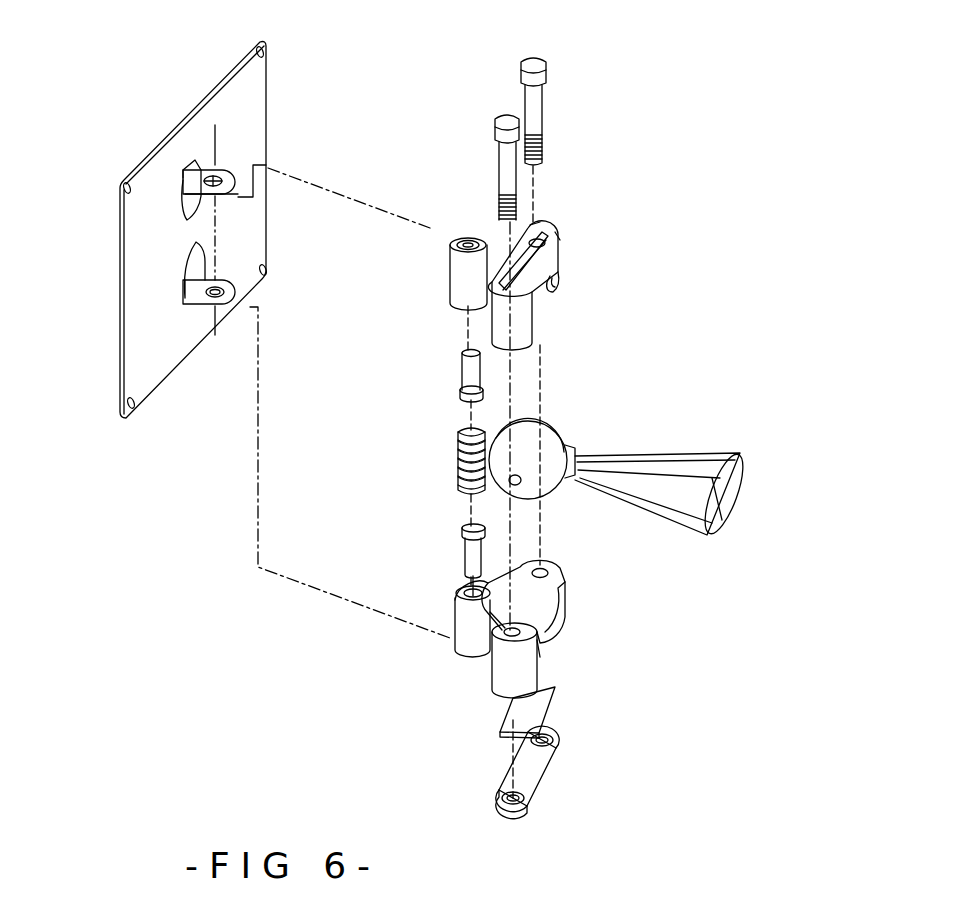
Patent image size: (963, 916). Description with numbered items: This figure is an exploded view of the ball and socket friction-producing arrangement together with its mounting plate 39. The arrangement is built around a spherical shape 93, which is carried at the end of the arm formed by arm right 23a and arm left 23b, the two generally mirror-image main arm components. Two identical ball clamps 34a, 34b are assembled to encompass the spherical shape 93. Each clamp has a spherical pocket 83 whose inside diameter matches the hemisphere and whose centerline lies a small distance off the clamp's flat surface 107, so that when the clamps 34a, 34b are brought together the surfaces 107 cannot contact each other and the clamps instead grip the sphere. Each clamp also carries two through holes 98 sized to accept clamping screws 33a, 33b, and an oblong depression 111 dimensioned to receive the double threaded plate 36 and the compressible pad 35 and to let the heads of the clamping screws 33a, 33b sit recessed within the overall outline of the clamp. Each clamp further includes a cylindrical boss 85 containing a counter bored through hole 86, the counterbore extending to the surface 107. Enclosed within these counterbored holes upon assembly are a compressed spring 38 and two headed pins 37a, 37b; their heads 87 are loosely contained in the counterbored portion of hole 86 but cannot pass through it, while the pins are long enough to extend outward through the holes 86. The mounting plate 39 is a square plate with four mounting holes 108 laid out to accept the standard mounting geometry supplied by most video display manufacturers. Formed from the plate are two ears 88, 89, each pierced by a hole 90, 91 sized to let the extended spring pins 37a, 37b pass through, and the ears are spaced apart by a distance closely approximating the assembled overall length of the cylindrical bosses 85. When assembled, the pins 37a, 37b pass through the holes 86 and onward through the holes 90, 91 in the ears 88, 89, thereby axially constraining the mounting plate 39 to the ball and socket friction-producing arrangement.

The mounting plate 39 is at (120, 322).
The mounting holes 108 is at (264, 50).
The ear 88 is at (200, 180).
The hole 90 is at (205, 176).
The ear 89 is at (200, 302).
The hole 91 is at (218, 300).
The clamping screw 33a is at (547, 62).
The clamping screw 33b is at (521, 118).
The cylindrical boss 85 is at (452, 278).
The counter bored through hole 86 is at (463, 243).
The ball clamp 34a is at (558, 263).
The oblong depression 111 is at (547, 223).
The through holes 98 is at (533, 268).
The spherical pocket 83 is at (556, 284).
The headed pin 37a is at (461, 362).
The heads 87 is at (460, 394).
The compressed spring 38 is at (458, 466).
The headed pin 37b is at (466, 560).
The spherical shape 93 is at (566, 440).
The arm right 23a is at (742, 453).
The arm left 23b is at (723, 517).
The ball clamp 34b is at (548, 647).
The flat surface 107 is at (560, 576).
The compressible pad 35 is at (556, 700).
The double threaded plate 36 is at (557, 765).